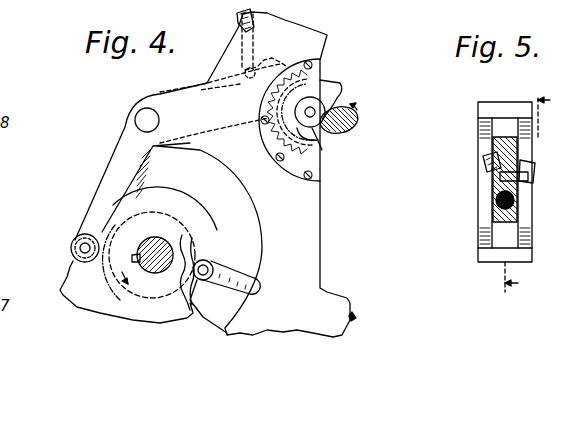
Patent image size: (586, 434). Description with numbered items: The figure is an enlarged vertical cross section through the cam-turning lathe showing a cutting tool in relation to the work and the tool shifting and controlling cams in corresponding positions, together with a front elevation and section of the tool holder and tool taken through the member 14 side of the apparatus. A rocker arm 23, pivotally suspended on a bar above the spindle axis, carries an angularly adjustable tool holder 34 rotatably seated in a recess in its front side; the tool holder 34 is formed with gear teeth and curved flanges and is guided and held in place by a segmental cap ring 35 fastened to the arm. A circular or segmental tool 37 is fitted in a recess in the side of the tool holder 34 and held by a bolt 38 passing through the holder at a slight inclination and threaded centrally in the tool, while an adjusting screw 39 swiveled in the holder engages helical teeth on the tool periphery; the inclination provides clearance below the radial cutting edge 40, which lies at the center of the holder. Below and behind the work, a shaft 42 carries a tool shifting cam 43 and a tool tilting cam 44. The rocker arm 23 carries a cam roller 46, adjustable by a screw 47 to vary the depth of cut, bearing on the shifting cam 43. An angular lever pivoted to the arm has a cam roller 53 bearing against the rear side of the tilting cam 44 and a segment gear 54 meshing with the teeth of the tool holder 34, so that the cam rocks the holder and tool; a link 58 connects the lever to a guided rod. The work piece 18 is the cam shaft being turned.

In FIG. 5, the separable member 14 is at (522, 194).
In FIG. 4, the cam 18 is at (359, 120).
In FIG. 4, the rocker arm 23 is at (253, 173).
In FIG. 4, the tool holder 34 is at (330, 83).
In FIG. 5, the tool holder 34 is at (478, 108).
In FIG. 4, the segmental cap ring 35 is at (295, 68).
In FIG. 4, the circular or segmental tool 37 is at (319, 121).
In FIG. 5, the circular or segmental tool 37 is at (494, 188).
In FIG. 4, the bolt 38 is at (314, 135).
In FIG. 5, the bolt 38 is at (534, 174).
In FIG. 4, the adjusting screw 39 is at (319, 150).
In FIG. 5, the adjusting screw 39 is at (514, 203).
In FIG. 5, the radial cutting edge 40 is at (490, 173).
In FIG. 4, the shaft 42 is at (157, 240).
In FIG. 4, the tool operating or shifting cam 43 is at (200, 242).
In FIG. 4, the tool tilting or adjusting cam 44 is at (138, 255).
In FIG. 4, the cam roller 46 is at (209, 290).
In FIG. 4, the screw 47 is at (353, 317).
In FIG. 4, the cam roller 53 is at (71, 248).
In FIG. 4, the segment gear 54 is at (115, 162).
In FIG. 4, the link 58 is at (242, 16).